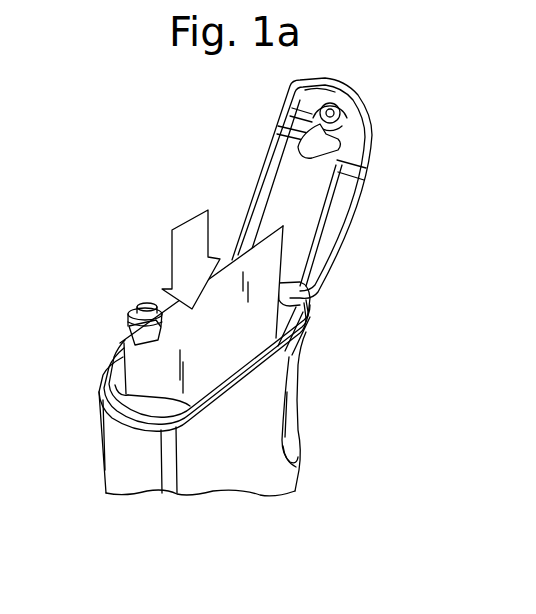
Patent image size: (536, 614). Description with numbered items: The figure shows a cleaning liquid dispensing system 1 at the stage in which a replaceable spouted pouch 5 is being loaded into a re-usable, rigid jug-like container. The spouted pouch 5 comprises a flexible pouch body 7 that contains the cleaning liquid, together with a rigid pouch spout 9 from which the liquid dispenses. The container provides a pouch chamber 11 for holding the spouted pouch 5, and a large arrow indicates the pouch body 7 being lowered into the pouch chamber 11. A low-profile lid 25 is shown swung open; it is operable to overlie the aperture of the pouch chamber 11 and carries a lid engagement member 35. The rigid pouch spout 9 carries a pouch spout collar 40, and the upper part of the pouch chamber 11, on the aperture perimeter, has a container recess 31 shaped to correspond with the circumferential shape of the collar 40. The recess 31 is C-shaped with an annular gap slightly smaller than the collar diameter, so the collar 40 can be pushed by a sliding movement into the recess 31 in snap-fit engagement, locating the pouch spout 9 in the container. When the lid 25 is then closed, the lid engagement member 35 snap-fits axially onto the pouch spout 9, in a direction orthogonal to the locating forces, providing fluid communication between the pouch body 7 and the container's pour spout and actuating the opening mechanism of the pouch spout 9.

The cleaning liquid dispensing system 1 is at (163, 116).
The spouted pouch 5 is at (142, 262).
The flexible pouch body 7 is at (233, 341).
The rigid pouch spout 9 is at (120, 298).
The pouch chamber 11 is at (238, 483).
The lid 25 is at (323, 213).
The container recess 31 is at (99, 385).
The lid engagement member 35 is at (345, 114).
The pouch spout collar 40 is at (128, 319).